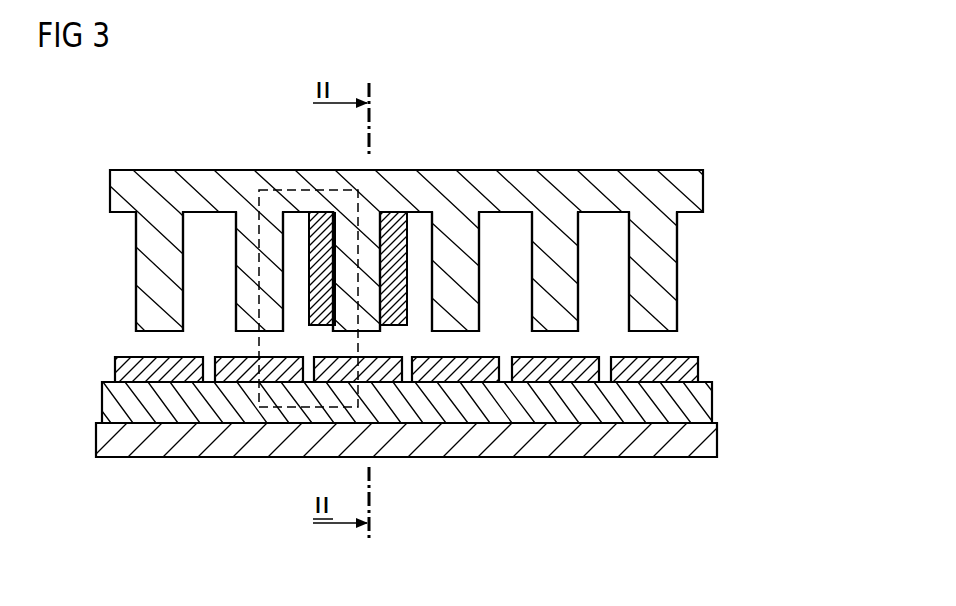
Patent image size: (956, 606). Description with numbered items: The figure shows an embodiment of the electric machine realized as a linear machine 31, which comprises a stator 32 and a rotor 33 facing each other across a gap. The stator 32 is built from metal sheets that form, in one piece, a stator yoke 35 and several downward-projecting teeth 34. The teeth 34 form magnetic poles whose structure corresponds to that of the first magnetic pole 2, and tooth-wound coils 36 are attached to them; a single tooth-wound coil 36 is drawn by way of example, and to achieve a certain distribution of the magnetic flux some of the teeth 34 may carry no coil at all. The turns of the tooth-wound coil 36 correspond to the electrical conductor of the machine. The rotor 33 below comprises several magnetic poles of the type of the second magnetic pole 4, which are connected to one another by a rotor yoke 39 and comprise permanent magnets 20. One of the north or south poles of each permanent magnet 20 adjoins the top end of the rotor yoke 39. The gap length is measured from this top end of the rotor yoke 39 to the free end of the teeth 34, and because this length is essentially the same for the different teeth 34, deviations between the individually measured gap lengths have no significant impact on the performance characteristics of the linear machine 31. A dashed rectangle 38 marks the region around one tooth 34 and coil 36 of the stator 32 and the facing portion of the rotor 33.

The first magnetic pole 2 is at (97, 262).
The second magnetic pole 4 is at (95, 403).
The permanent magnets 20 is at (245, 373).
The linear machine 31 is at (493, 93).
The stator 32 is at (722, 250).
The rotor 33 is at (722, 380).
The teeth 34 is at (243, 222).
The stator yoke 35 is at (526, 180).
The tooth-wound coil 36 is at (318, 210).
The detail region 38 is at (305, 210).
The rotor yoke 39 is at (500, 407).